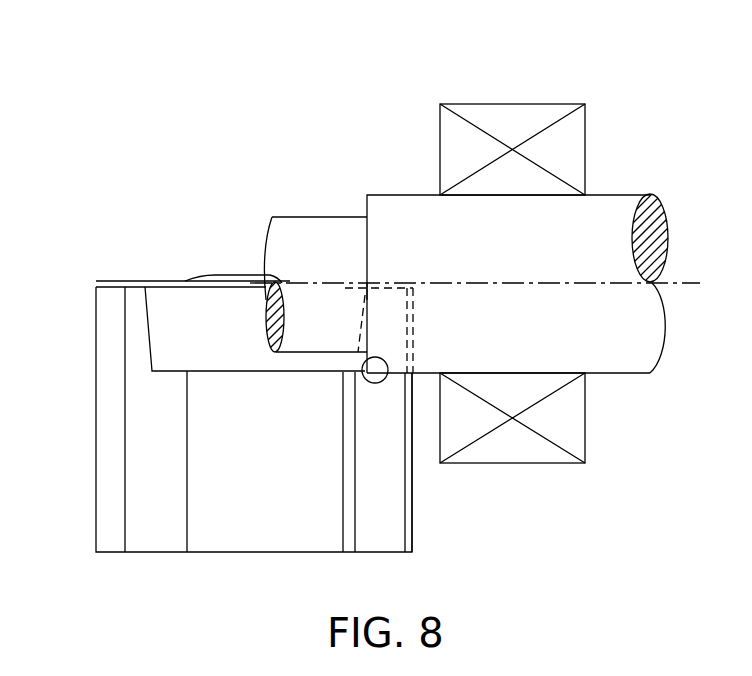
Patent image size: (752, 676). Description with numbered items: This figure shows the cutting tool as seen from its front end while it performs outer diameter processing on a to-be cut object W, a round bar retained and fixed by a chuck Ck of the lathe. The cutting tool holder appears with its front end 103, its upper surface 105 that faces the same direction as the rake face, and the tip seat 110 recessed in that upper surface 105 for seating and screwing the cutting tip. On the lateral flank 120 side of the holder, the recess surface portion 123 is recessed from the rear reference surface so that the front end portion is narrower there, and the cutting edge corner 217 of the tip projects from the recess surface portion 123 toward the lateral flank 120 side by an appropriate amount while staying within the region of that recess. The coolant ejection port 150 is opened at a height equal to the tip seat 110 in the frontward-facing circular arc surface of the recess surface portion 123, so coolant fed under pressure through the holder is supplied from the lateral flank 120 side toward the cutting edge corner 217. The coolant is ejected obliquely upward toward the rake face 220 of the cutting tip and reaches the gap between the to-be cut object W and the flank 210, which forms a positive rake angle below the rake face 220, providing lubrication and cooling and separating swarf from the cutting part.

The front end 103 is at (216, 500).
The upper surface 105 is at (112, 281).
The tip seat 110 is at (228, 371).
The lateral flank 120 is at (412, 515).
The recess surface portion 123 is at (355, 472).
The coolant ejection port 150 is at (362, 378).
The lateral flank 210 is at (370, 322).
The cutting edge corner 217 is at (367, 283).
The rake face 220 is at (331, 283).
The chuck Ck is at (502, 106).
The to-be cut object W is at (392, 197).